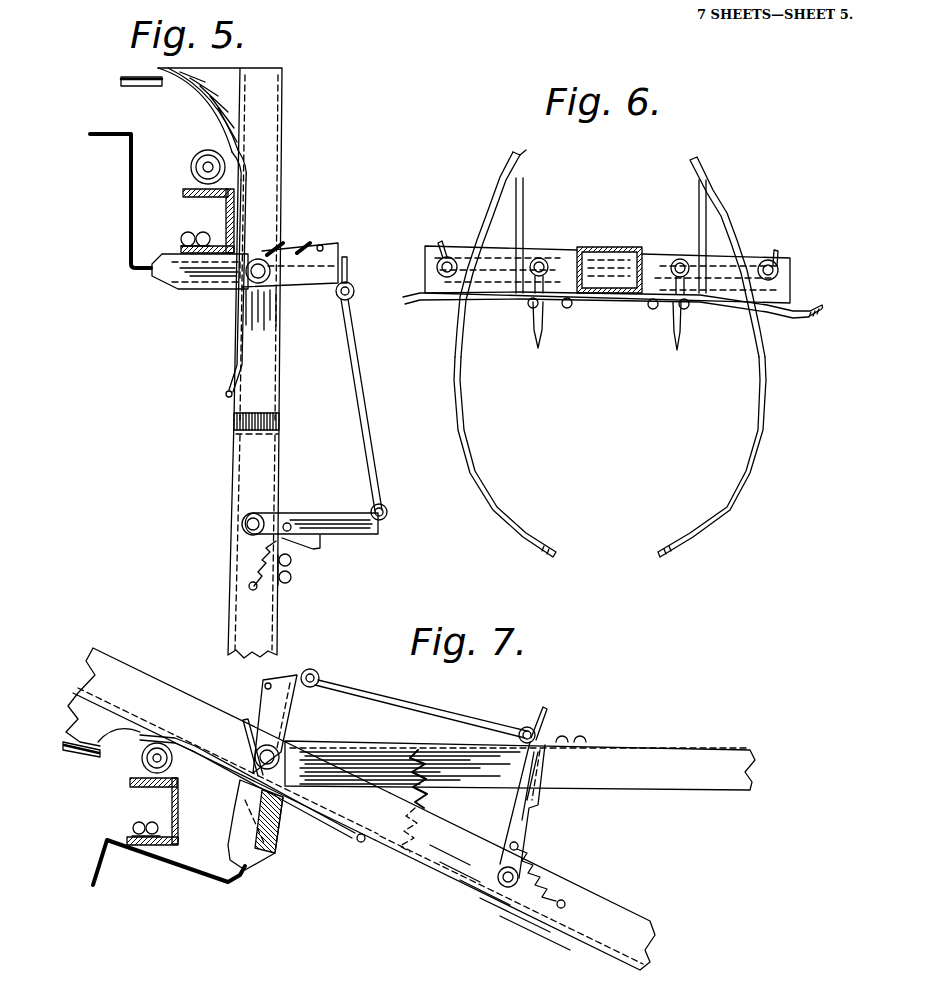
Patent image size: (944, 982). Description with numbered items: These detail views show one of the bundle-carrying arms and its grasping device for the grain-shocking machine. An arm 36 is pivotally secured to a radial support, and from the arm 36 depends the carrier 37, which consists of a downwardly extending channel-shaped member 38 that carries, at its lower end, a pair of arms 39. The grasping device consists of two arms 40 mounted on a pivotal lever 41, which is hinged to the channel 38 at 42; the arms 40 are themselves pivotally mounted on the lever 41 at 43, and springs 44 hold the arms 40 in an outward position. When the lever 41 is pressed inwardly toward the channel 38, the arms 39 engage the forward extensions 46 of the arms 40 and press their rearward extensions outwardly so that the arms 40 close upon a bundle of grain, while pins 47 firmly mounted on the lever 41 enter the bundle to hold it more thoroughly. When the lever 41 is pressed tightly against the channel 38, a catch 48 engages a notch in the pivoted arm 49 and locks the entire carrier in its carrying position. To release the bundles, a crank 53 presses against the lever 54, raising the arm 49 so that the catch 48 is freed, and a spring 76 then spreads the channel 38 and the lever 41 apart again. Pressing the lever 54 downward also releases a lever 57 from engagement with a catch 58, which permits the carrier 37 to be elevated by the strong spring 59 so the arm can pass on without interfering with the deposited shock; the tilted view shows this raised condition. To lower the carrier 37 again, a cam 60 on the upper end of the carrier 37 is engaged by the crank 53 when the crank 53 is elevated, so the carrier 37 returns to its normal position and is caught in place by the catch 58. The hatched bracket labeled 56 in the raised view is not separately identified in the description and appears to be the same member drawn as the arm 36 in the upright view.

In FIG. 5, the arm 36 is at (237, 222).
In FIG. 5, the carrier 37 is at (267, 380).
In FIG. 6, the carrier 37 is at (608, 247).
In FIG. 7, the carrier 37 is at (430, 853).
In FIG. 5, the channel-shaped member 38 is at (243, 480).
In FIG. 7, the channel-shaped member 38 is at (593, 933).
In FIG. 6, the arms 39 is at (699, 180).
In FIG. 6, the arms 40 is at (487, 483).
In FIG. 6, the pivotal lever 41 is at (627, 262).
In FIG. 7, the pivotal lever 41 is at (670, 760).
In FIG. 5, the hinge 42 is at (277, 288).
In FIG. 7, the hinge 42 is at (293, 740).
In FIG. 6, the pivot 43 is at (448, 266).
In FIG. 6, the springs 44 is at (477, 213).
In FIG. 6, the forward extensions 46 is at (517, 157).
In FIG. 6, the pins 47 is at (670, 323).
In FIG. 5, the catch 48 is at (303, 547).
In FIG. 7, the catch 48 is at (547, 710).
In FIG. 5, the pivoted arm 49 is at (317, 513).
In FIG. 7, the pivoted arm 49 is at (538, 805).
In FIG. 5, the crank 53 is at (137, 86).
In FIG. 7, the crank 53 is at (81, 760).
In FIG. 5, the lever 54 is at (129, 189).
In FIG. 7, the lever 54 is at (169, 864).
In FIG. 7, the angle bracket 56 is at (178, 822).
In FIG. 5, the lever 57 is at (181, 290).
In FIG. 7, the lever 57 is at (277, 847).
In FIG. 5, the catch 58 is at (178, 240).
In FIG. 7, the catch 58 is at (137, 833).
In FIG. 5, the strong spring 59 is at (237, 330).
In FIG. 7, the strong spring 59 is at (237, 773).
In FIG. 5, the cam 60 is at (213, 98).
In FIG. 7, the cam 60 is at (132, 752).
In FIG. 5, the spring 76 is at (277, 433).
In FIG. 7, the spring 76 is at (427, 805).